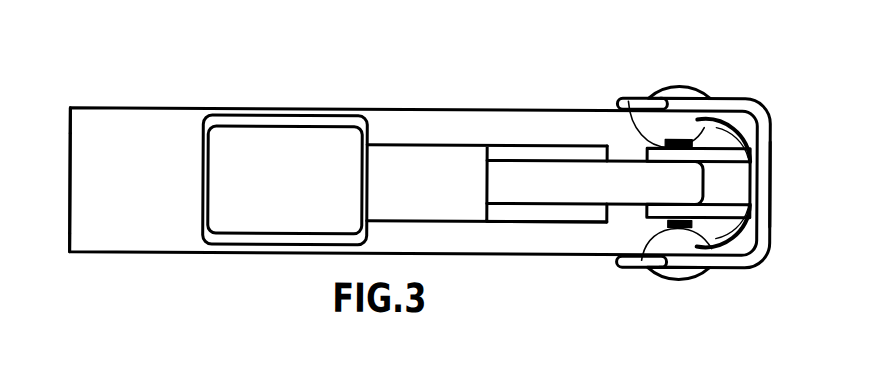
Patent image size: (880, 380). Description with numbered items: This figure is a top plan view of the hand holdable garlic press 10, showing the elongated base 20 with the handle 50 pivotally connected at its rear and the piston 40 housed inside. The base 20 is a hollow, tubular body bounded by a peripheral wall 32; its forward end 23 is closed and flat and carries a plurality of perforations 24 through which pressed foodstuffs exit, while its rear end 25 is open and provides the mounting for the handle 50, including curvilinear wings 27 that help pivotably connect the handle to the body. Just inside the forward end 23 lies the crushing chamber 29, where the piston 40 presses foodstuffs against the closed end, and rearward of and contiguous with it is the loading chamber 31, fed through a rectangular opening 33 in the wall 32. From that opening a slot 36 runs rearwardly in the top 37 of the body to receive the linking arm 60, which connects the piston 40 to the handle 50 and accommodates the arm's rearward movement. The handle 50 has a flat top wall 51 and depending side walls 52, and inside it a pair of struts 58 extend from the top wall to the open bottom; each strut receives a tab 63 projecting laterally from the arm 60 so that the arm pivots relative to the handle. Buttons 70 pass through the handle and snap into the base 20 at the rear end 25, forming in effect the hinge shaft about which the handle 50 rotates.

The hand holdable garlic press 10 is at (477, 91).
The base 20 is at (522, 128).
The forward end 23 is at (70, 127).
The perforations 24 is at (70, 146).
The rear end 25 is at (688, 128).
The curvilinear wings 27 is at (727, 246).
The crushing chamber 29 is at (152, 173).
The loading chamber 31 is at (237, 160).
The peripheral wall 32 is at (168, 220).
The opening 33 is at (317, 140).
The slot 36 is at (523, 215).
The top 37 is at (543, 236).
The piston 40 is at (422, 178).
The handle 50 is at (760, 126).
The top wall 51 is at (770, 134).
The side walls 52 is at (737, 98).
The struts 58 is at (738, 150).
The linking arm 60 is at (584, 190).
The tabs 63 is at (628, 100).
The buttons 70 is at (677, 90).